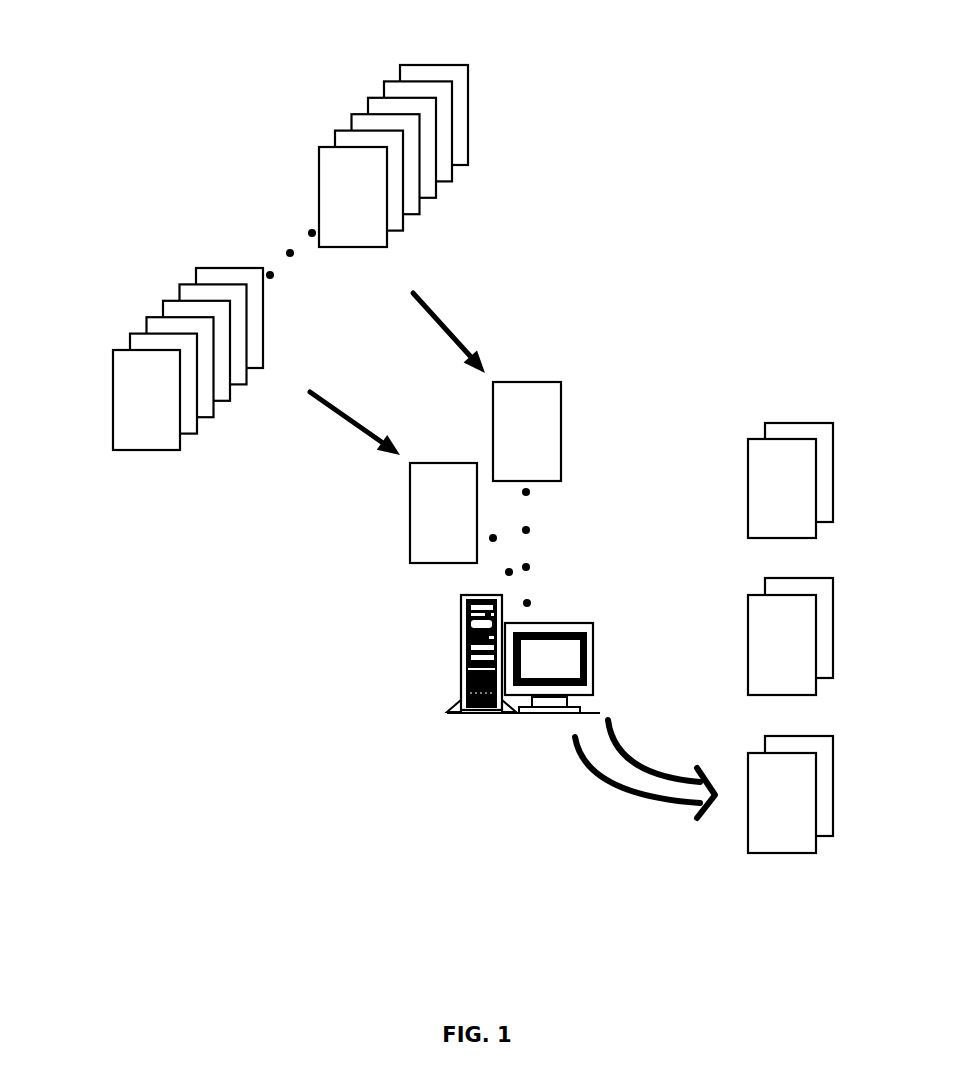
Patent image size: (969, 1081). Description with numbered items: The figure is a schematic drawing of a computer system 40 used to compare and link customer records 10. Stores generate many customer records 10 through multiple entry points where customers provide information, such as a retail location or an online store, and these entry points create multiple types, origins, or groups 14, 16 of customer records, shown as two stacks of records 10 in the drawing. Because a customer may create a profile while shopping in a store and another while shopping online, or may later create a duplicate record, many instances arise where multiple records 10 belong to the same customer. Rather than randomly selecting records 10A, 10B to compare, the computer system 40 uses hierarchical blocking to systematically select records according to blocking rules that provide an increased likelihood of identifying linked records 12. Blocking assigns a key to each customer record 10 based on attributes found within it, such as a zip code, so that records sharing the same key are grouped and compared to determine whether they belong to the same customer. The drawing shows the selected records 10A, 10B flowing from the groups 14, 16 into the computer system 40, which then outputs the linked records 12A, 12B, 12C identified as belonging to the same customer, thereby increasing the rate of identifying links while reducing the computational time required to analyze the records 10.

The customer record 10 is at (250, 298).
The group of customer records 14 is at (225, 237).
The group of customer records 16 is at (435, 30).
The record 10A is at (443, 513).
The record 10B is at (527, 431).
The linked records 12 is at (728, 390).
The linked record 12A is at (790, 794).
The linked record 12B is at (790, 636).
The linked record 12C is at (790, 480).
The computer system 40 is at (436, 687).